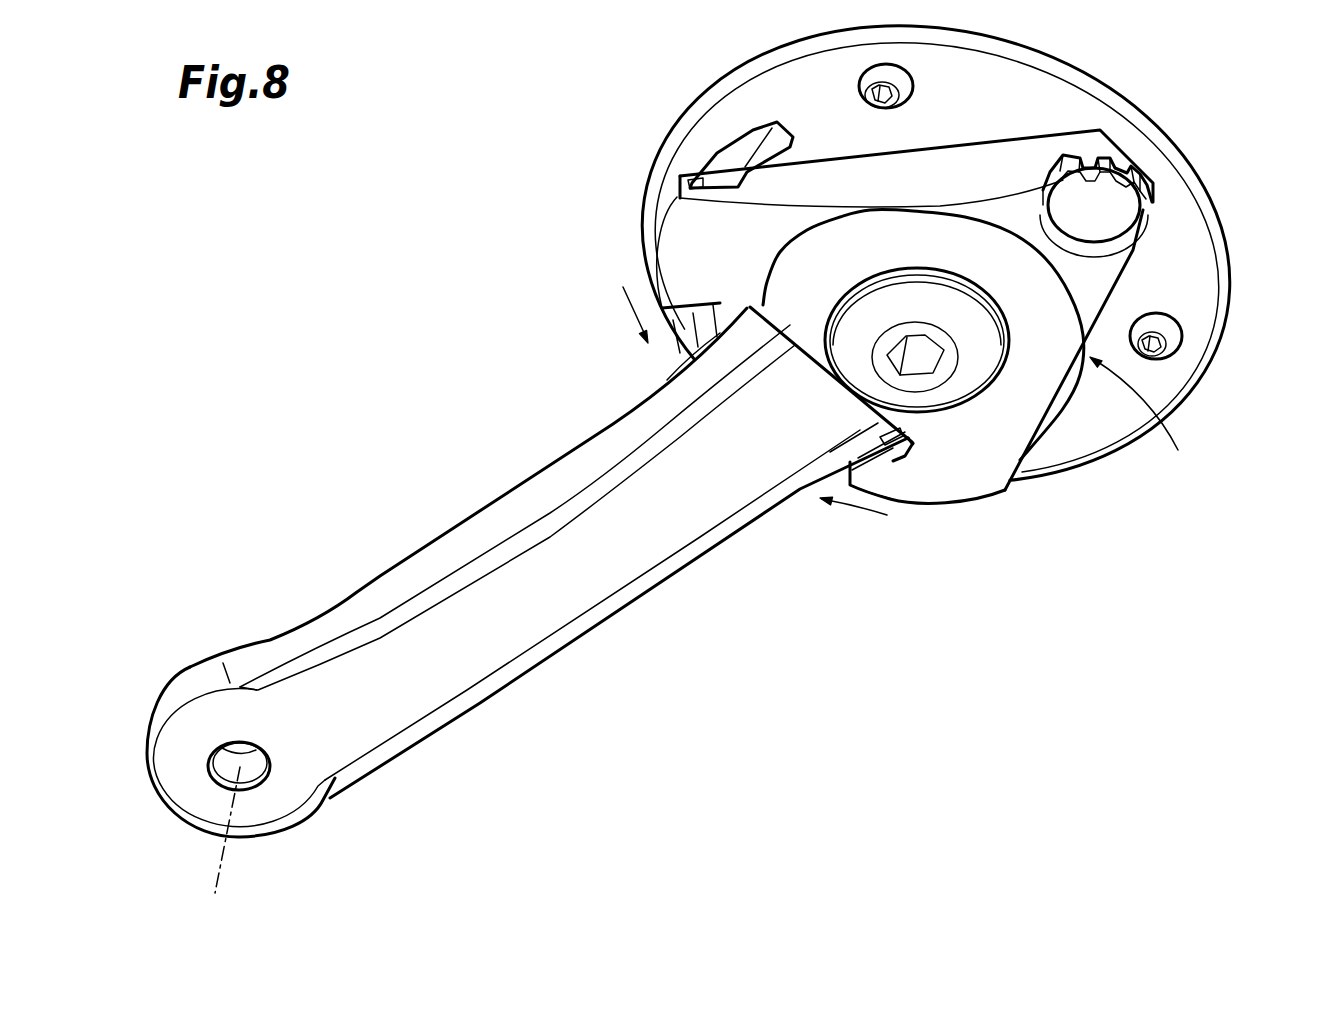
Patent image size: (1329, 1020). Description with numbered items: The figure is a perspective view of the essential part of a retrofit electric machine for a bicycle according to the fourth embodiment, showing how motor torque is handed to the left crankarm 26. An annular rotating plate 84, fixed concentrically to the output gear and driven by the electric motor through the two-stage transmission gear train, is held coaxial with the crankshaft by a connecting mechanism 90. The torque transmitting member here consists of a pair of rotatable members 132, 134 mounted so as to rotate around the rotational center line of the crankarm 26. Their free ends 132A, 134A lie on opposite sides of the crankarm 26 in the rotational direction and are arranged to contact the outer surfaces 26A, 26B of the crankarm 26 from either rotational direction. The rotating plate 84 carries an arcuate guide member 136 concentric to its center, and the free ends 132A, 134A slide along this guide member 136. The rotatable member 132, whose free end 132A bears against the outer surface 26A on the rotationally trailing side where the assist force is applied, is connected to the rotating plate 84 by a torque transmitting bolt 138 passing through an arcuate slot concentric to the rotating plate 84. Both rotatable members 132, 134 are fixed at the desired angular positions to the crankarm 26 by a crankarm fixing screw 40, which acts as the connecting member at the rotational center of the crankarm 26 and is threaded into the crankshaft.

The left crankarm 26 is at (530, 600).
The outer surface of crankarm 26A is at (505, 520).
The outer surface of crankarm 26B is at (523, 677).
The crankarm fixing screw 40 is at (982, 368).
The rotating plate 84 is at (1073, 443).
The connecting mechanism 90 is at (1145, 421).
The rotatable member 132 is at (820, 255).
The free end of rotatable member 132A is at (683, 233).
The rotatable member 134 is at (970, 470).
The tab of carrier plate 134A is at (893, 488).
The arcuate guide member 136 is at (752, 147).
The torque transmitting bolt 138 is at (1115, 223).